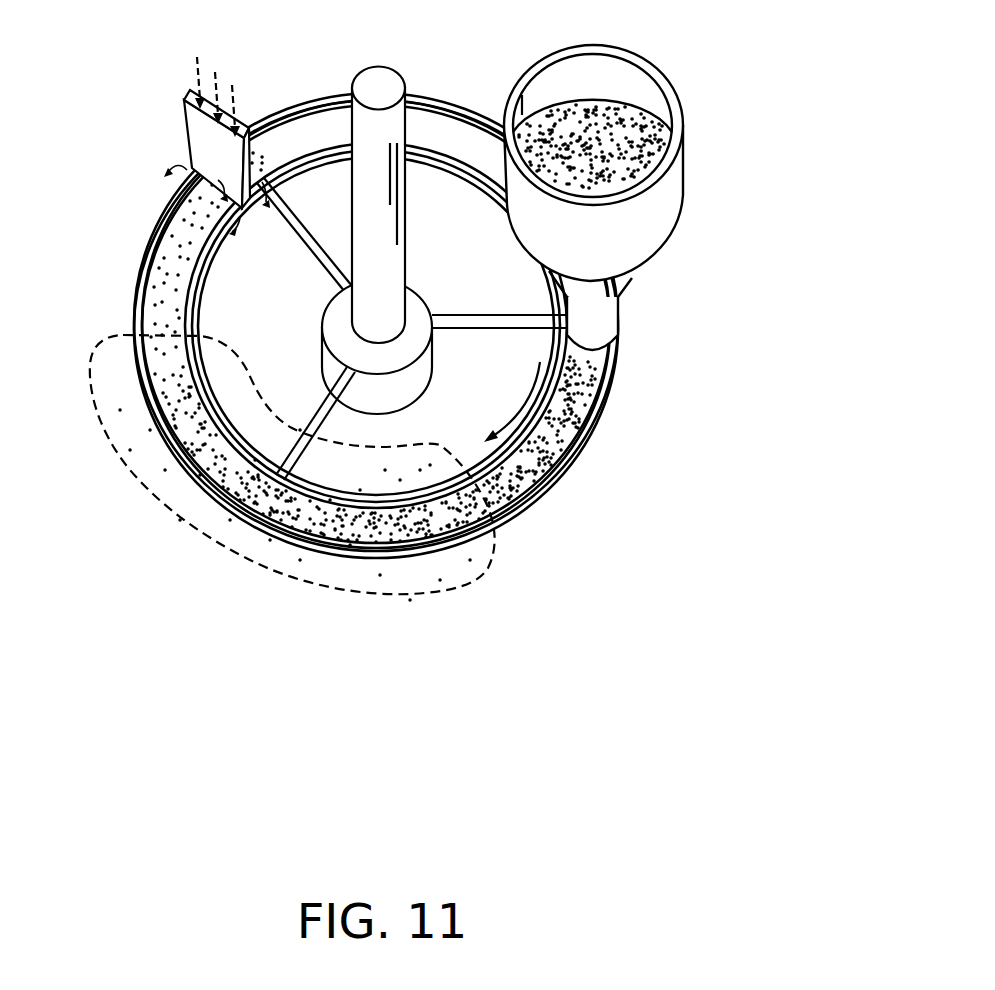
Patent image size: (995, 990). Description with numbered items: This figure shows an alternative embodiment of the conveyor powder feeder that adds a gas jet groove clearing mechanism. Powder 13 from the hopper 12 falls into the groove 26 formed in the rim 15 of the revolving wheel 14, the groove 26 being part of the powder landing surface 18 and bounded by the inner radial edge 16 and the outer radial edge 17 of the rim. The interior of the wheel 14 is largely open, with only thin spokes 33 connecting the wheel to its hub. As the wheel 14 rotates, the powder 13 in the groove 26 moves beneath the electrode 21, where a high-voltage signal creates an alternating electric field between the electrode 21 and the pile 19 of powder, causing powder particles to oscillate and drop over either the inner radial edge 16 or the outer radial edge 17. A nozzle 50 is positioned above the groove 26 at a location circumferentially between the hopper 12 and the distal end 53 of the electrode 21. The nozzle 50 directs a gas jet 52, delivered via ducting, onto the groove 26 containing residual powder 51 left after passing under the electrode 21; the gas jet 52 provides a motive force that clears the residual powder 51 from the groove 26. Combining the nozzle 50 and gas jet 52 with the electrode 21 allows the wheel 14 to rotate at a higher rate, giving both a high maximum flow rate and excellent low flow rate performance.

The hopper 12 is at (633, 90).
The powder 13 is at (620, 163).
The revolving wheel 14 is at (300, 103).
The rim 15 is at (570, 452).
The inner radial edge 16 is at (560, 378).
The outer radial edge 17 is at (598, 418).
The powder landing surface 18 is at (440, 130).
The pile 19 is at (528, 485).
The electrode 21 is at (192, 523).
The groove 26 is at (333, 117).
The spokes 33 is at (538, 326).
The nozzle 50 is at (207, 148).
The residual powder 51 is at (170, 262).
The gas jet 52 is at (195, 83).
The distal end 53 is at (162, 337).